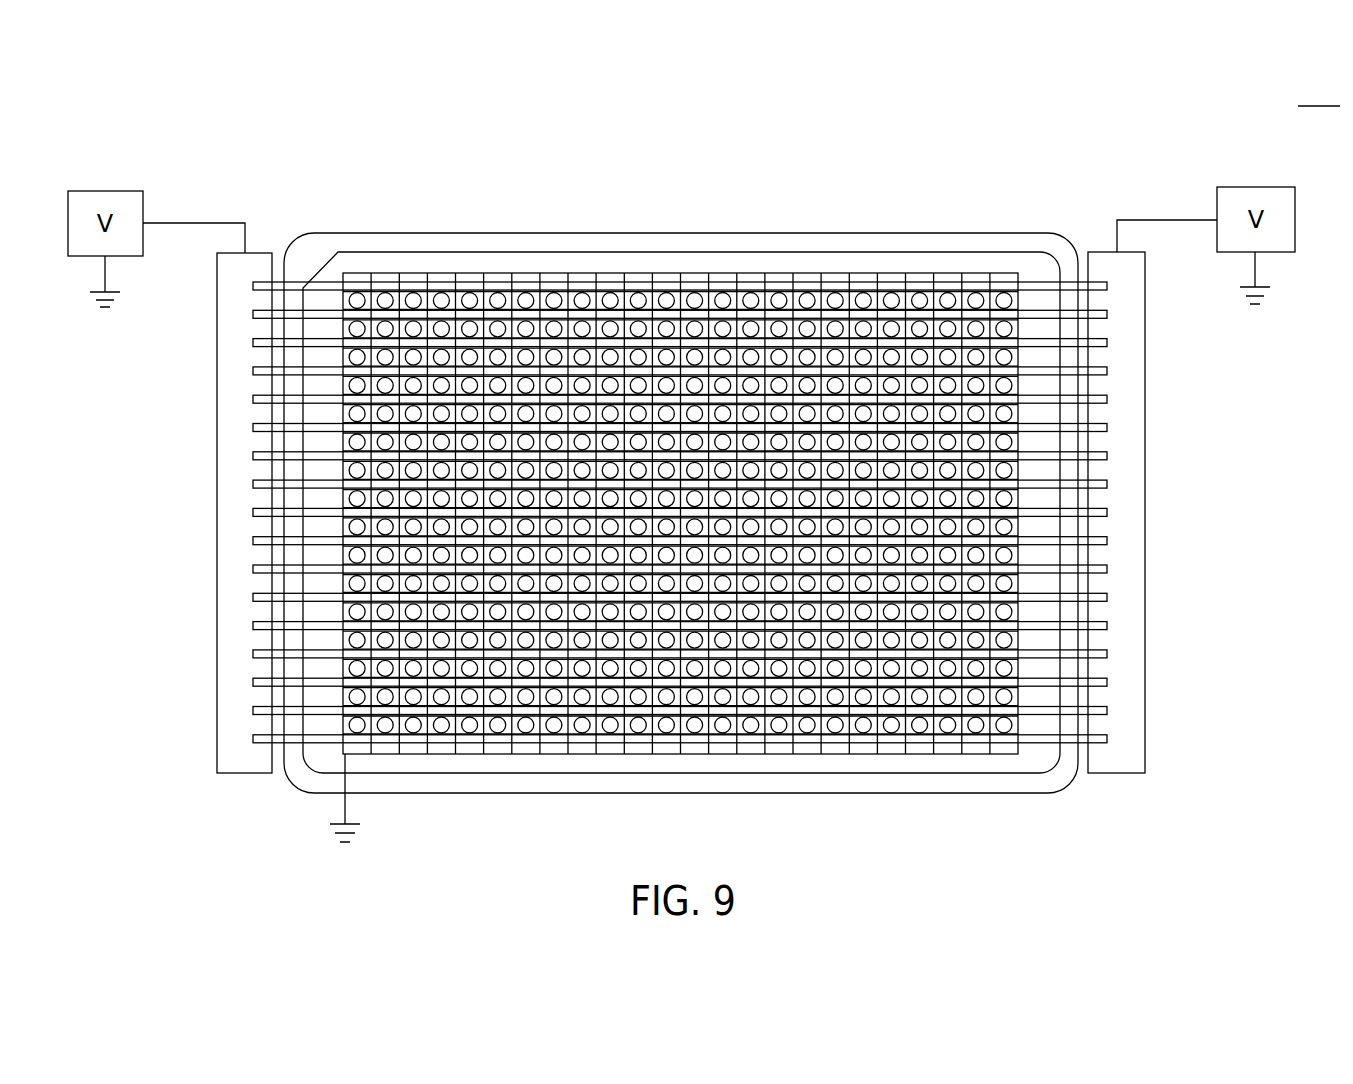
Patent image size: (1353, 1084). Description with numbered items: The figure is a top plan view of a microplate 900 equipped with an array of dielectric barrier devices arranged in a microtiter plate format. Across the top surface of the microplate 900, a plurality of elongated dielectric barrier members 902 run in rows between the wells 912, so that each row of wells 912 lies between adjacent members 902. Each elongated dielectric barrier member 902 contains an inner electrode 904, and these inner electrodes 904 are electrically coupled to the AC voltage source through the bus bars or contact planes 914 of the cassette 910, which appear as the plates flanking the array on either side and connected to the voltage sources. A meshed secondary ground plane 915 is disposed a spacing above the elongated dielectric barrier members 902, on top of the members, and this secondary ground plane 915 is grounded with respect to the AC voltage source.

The microplate 900 is at (1319, 93).
The elongated dielectric barrier members 902 is at (303, 288).
The inner electrodes 904 is at (253, 372).
The cassette 910 is at (1070, 228).
The wells 912 is at (753, 325).
The bus bars or contact planes 914 is at (237, 548).
The meshed secondary ground plane 915 is at (445, 272).